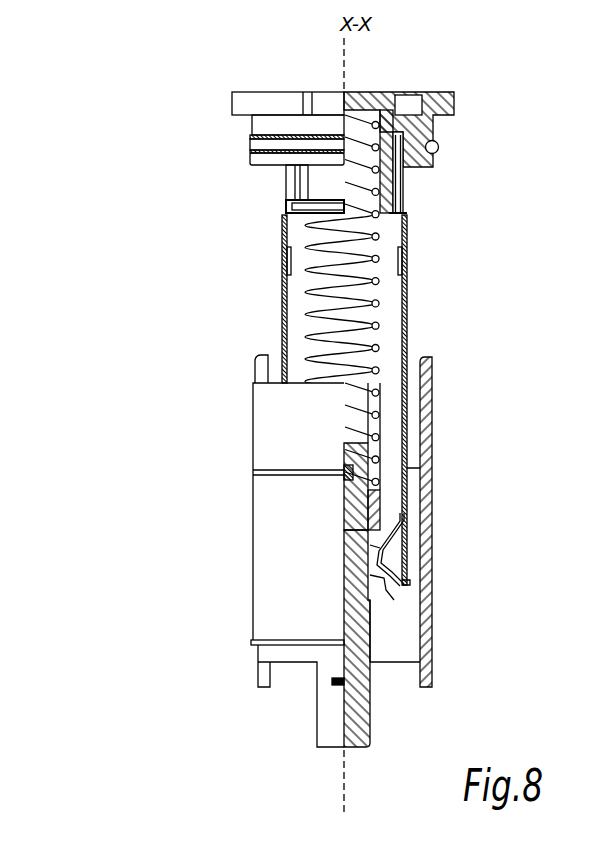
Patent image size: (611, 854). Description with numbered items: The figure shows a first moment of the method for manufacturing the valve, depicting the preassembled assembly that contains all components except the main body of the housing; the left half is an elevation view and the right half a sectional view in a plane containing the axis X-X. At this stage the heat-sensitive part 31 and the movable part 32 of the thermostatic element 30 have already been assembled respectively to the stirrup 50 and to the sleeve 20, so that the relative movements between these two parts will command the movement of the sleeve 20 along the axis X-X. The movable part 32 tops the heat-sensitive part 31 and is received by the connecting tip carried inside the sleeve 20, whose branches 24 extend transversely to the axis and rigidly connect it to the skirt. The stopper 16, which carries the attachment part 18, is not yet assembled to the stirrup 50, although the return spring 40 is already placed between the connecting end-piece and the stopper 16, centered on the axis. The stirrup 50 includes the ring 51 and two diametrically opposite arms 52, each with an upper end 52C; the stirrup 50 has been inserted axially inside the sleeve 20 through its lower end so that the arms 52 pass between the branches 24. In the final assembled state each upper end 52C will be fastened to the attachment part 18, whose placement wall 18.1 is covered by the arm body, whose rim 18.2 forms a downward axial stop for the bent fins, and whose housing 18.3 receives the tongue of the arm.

The stopper 16 is at (230, 100).
The attachment part 18 is at (430, 164).
The placement wall 18.1 is at (403, 173).
The rim 18.2 is at (398, 213).
The housing 18.3 is at (433, 165).
The return spring 40 is at (300, 234).
The arm 52 is at (366, 400).
The upper end 52C is at (410, 235).
The sleeve 20 is at (250, 432).
The branches 24 is at (387, 438).
The thermostatic element 30 is at (236, 565).
The heat-sensitive part 31 is at (350, 580).
The movable part 32 is at (350, 477).
The stirrup 50 is at (410, 497).
The ring 51 is at (387, 570).